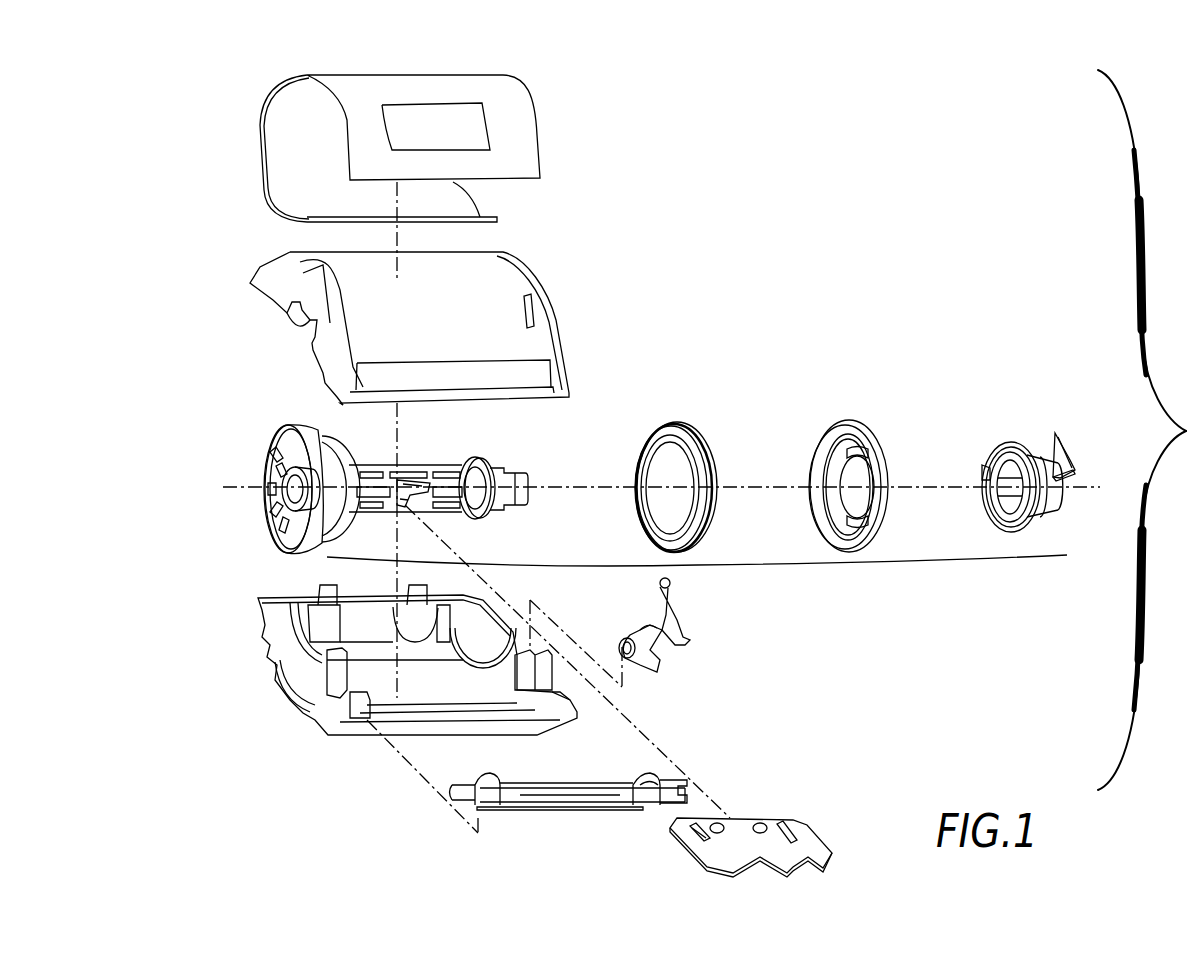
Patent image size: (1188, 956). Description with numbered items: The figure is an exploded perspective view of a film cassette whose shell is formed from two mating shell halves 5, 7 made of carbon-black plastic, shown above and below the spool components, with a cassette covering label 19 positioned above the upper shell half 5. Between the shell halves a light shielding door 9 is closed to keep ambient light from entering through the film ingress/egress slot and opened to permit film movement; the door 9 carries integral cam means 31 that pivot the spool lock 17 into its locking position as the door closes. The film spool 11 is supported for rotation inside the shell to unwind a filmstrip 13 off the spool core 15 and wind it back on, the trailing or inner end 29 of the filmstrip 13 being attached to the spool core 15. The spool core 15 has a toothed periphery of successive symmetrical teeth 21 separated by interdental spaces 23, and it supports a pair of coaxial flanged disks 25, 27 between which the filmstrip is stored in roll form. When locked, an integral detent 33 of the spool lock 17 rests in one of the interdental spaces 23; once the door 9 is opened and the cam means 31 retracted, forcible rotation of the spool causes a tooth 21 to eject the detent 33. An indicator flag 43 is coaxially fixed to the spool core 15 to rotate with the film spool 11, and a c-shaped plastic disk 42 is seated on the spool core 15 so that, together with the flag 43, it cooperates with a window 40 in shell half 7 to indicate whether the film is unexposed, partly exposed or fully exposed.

The shell half 5 is at (547, 290).
The shell half 7 is at (302, 717).
The light shielding door 9 is at (550, 810).
The film spool 11 is at (697, 563).
The filmstrip 13 is at (810, 843).
The spool core 15 is at (470, 458).
The spool lock 17 is at (683, 638).
The cassette covering label 19 is at (527, 92).
The teeth 21 is at (1042, 447).
The interdental spaces 23 is at (1060, 433).
The flanged disk 25 is at (838, 420).
The flanged disk 27 is at (680, 420).
The trailing or inner end 29 is at (730, 818).
The cam means 31 is at (660, 773).
The detent 33 is at (650, 628).
The window 40 is at (297, 688).
The plastic disk 42 is at (297, 438).
The indicator flag 43 is at (1073, 470).